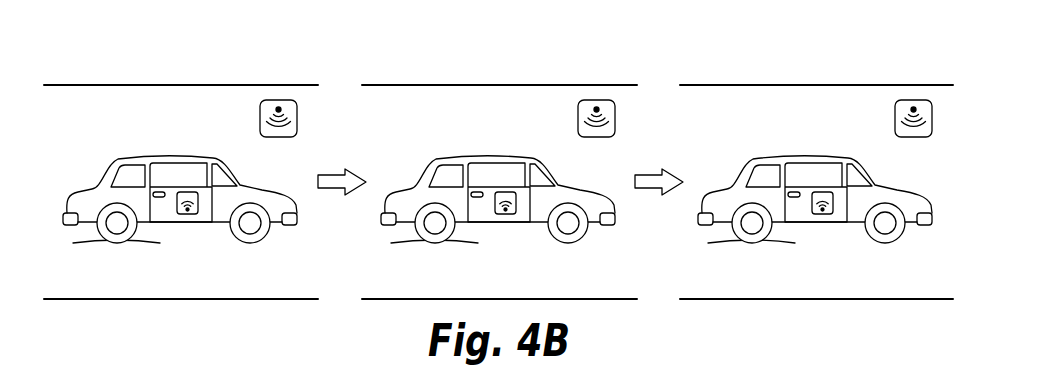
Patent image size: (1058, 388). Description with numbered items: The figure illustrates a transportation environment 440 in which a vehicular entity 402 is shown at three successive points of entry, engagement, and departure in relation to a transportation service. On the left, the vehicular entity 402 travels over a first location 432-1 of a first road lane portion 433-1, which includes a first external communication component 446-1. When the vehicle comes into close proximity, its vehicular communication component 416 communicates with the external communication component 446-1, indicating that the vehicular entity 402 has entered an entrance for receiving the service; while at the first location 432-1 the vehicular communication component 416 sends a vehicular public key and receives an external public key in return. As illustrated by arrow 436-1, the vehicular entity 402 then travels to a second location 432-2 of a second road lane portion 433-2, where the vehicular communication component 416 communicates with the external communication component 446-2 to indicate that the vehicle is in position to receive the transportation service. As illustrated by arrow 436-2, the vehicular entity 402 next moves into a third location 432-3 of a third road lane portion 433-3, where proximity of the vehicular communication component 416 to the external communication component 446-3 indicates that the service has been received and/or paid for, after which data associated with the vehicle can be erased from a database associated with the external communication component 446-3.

The transportation environment 440 is at (128, 31).
The first road lane portion 433-1 is at (240, 73).
The second road lane portion 433-2 is at (558, 73).
The third road lane portion 433-3 is at (875, 73).
The first external communication component 446-1 is at (260, 117).
The second external communication component 446-2 is at (578, 117).
The third external communication component 446-3 is at (894, 117).
The arrow 436-1 is at (334, 174).
The arrow 436-2 is at (650, 174).
The vehicular entity 402 is at (148, 157).
The vehicular communication component 416 is at (190, 208).
The first location 432-1 is at (141, 246).
The second location 432-2 is at (460, 246).
The third location 432-3 is at (776, 246).